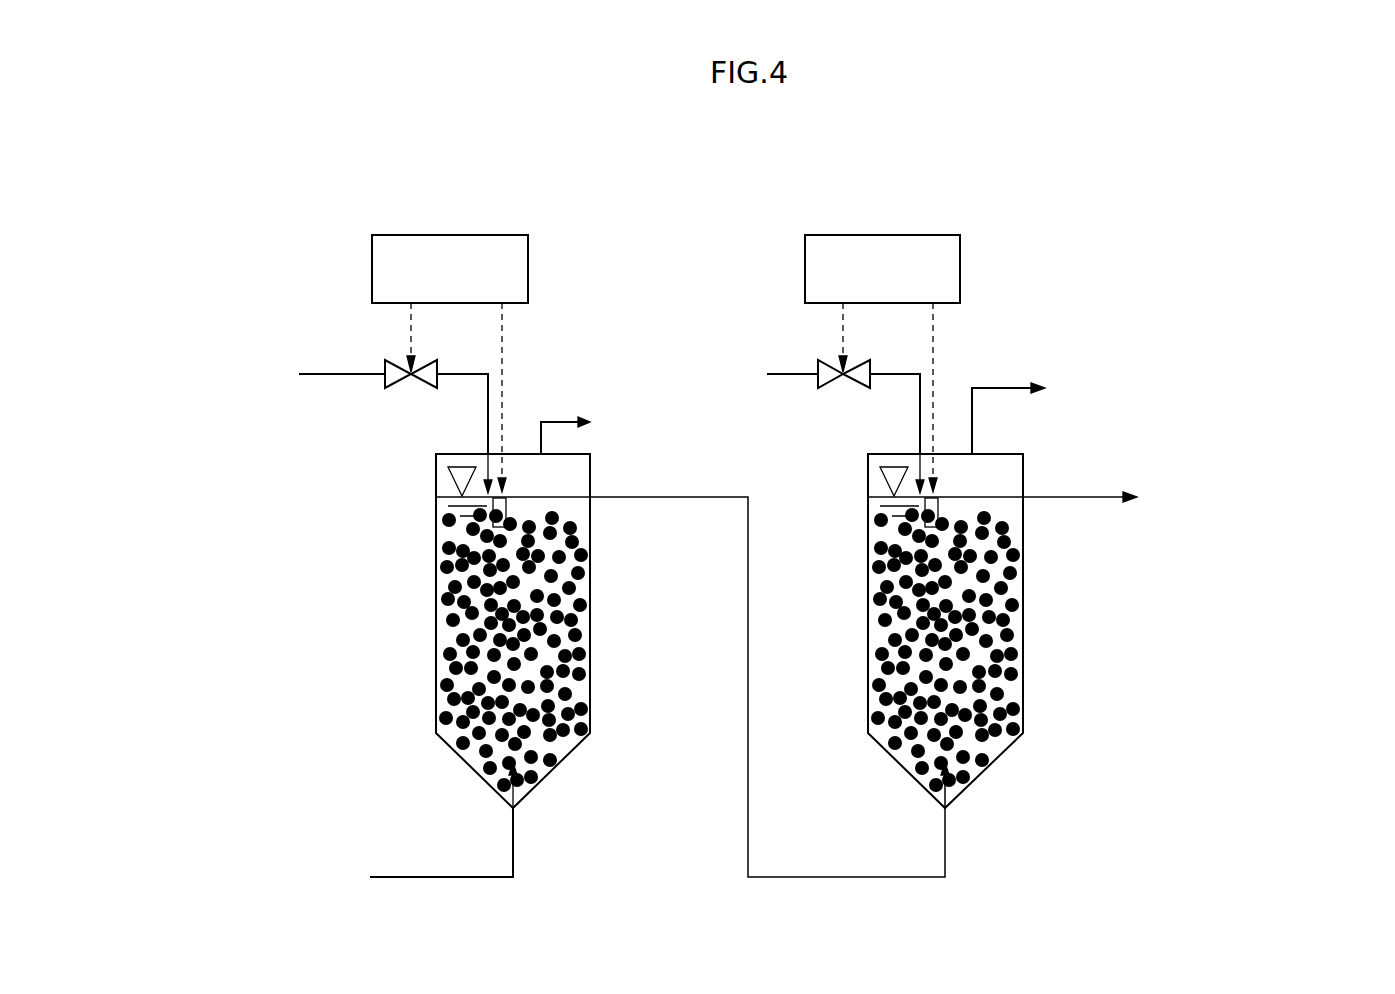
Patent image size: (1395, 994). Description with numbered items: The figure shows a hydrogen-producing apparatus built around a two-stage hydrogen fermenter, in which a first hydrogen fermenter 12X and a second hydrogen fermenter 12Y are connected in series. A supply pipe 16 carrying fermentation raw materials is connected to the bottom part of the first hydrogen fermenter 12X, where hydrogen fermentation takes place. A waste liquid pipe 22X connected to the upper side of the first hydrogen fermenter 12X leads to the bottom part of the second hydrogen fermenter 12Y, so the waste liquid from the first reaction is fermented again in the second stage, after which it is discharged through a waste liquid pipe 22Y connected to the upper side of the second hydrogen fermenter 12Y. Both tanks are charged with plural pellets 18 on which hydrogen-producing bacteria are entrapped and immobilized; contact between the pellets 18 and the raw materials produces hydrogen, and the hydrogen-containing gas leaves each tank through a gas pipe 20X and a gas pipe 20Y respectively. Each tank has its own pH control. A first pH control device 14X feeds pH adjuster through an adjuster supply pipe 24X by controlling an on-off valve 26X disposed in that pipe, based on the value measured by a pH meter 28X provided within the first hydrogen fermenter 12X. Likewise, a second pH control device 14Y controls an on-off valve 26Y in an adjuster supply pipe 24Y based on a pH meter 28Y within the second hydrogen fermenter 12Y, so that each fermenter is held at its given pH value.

The first hydrogen fermenter 12X is at (590, 665).
The second hydrogen fermenter 12Y is at (1023, 665).
The first pH control device 14X is at (456, 235).
The second pH control device 14Y is at (888, 235).
The supply pipe 16 is at (513, 852).
The pellets 18 is at (442, 650).
The gas pipe 20X is at (552, 421).
The gas pipe 20Y is at (1010, 387).
The waste liquid pipe 22X is at (748, 718).
The waste liquid pipe 22Y is at (1071, 496).
The adjuster supply pipe 24X is at (331, 373).
The adjuster supply pipe 24Y is at (790, 373).
The on-off valve 26X is at (398, 386).
The on-off valve 26Y is at (832, 386).
The pH meter 28X is at (506, 506).
The pH meter 28Y is at (938, 506).